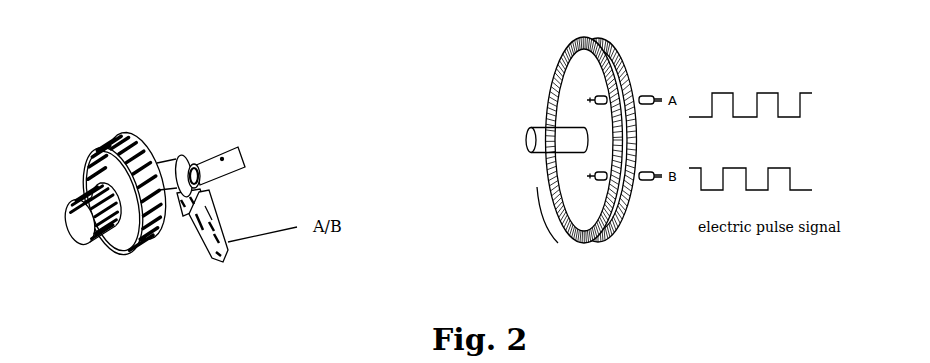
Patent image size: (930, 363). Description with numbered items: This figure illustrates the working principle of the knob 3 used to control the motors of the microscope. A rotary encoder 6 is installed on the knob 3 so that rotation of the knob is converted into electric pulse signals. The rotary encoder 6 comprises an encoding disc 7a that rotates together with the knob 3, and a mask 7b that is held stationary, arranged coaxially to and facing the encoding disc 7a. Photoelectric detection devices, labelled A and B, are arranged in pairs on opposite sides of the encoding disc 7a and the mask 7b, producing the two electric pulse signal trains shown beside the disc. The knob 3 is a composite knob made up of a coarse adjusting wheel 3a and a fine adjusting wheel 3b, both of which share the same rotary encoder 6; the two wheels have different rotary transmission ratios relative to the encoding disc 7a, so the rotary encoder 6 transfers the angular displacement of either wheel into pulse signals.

The knob 3 is at (118, 263).
The coarse adjusting wheel 3a is at (163, 240).
The fine adjusting wheel 3b is at (75, 232).
The rotary encoder 6 is at (180, 153).
The encoding disc 7a is at (562, 172).
The mask 7b is at (620, 193).